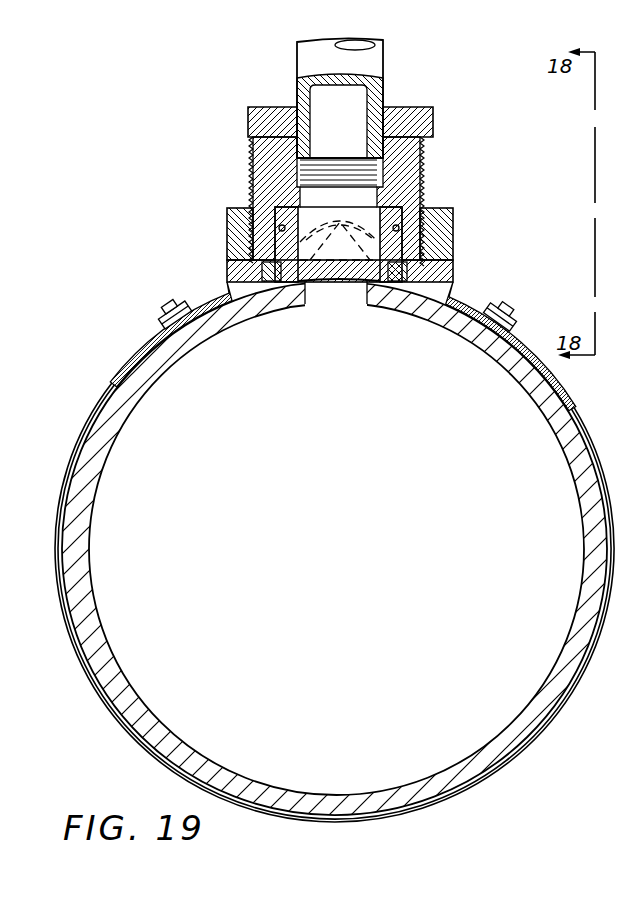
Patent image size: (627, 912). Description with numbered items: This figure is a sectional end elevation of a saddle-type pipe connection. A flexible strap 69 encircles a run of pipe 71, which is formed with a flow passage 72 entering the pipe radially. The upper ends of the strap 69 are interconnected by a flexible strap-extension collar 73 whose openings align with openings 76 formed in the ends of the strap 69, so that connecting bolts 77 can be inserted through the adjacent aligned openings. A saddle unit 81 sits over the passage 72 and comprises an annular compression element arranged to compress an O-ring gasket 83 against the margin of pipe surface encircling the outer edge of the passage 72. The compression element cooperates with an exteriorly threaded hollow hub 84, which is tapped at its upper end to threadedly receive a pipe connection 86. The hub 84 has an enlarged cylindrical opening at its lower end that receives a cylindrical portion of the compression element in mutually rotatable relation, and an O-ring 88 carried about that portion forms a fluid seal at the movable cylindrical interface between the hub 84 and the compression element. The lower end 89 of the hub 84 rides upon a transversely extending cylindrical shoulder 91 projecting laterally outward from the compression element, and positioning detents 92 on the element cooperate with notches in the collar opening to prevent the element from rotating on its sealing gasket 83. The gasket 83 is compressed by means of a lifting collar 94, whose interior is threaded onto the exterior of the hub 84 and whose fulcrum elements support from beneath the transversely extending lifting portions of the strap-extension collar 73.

The flexible strap 69 is at (90, 420).
The pipe 71 is at (123, 402).
The flow passage 72 is at (330, 300).
The flexible strap-extension collar 73 is at (204, 298).
The openings 76 is at (515, 318).
The connecting bolts 77 is at (185, 322).
The saddle unit 81 is at (246, 155).
The O-ring gasket 83 is at (400, 287).
The exteriorly threaded hollow hub 84 is at (412, 161).
The pipe connection 86 is at (308, 58).
The O-ring 88 is at (400, 228).
The lower end of hub 89 is at (266, 272).
The cylindrical shoulder 91 is at (228, 226).
The positioning detents 92 is at (450, 282).
The lifting collar 94 is at (442, 208).